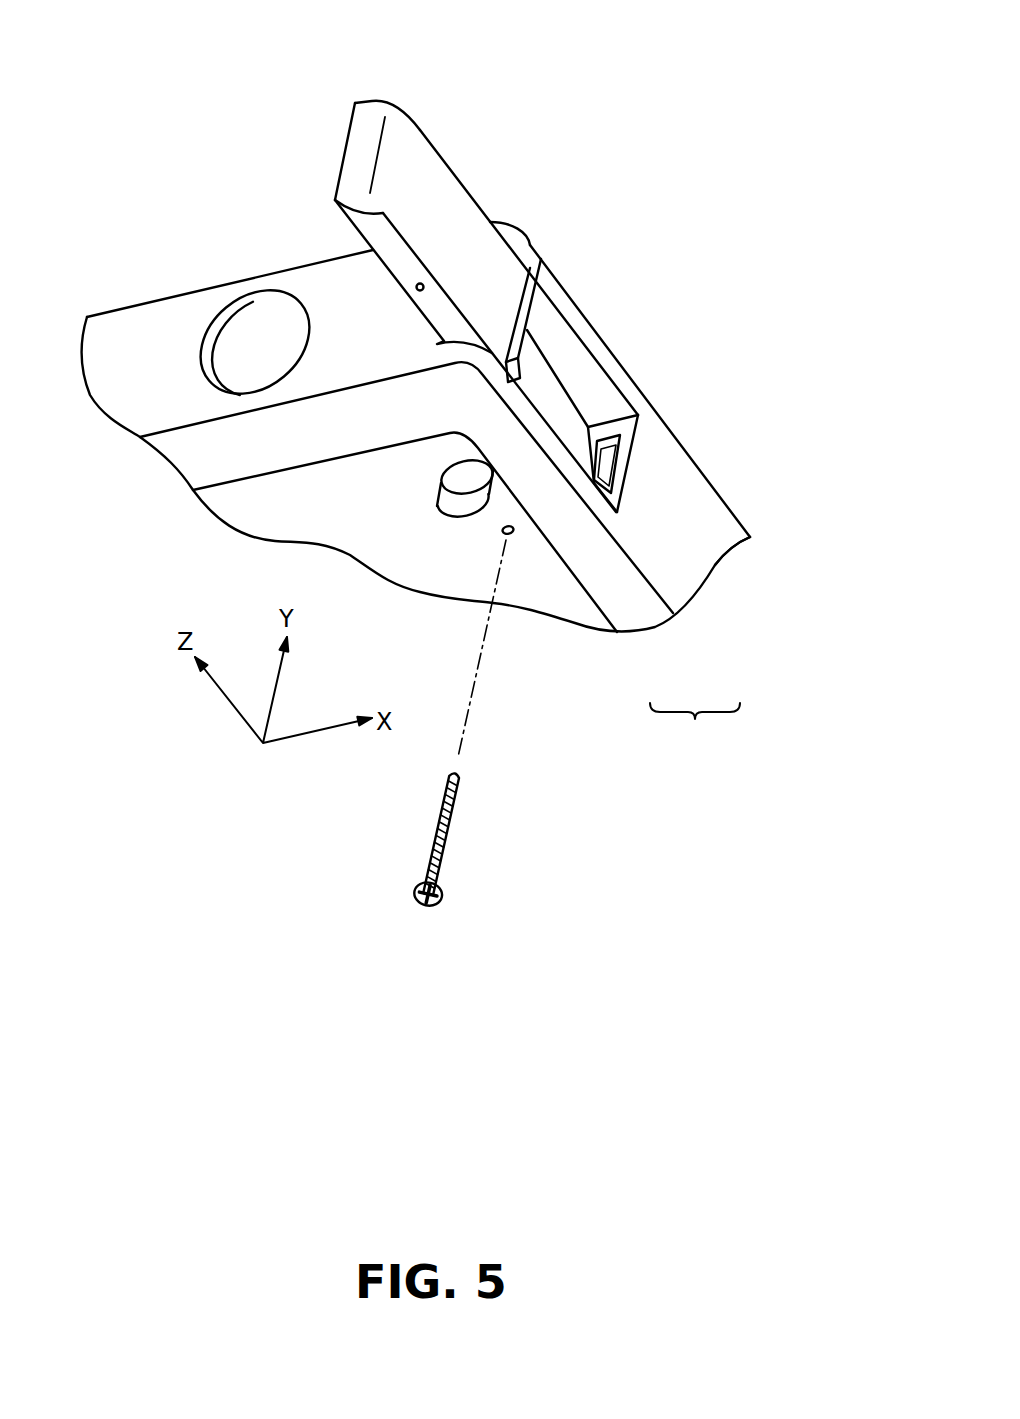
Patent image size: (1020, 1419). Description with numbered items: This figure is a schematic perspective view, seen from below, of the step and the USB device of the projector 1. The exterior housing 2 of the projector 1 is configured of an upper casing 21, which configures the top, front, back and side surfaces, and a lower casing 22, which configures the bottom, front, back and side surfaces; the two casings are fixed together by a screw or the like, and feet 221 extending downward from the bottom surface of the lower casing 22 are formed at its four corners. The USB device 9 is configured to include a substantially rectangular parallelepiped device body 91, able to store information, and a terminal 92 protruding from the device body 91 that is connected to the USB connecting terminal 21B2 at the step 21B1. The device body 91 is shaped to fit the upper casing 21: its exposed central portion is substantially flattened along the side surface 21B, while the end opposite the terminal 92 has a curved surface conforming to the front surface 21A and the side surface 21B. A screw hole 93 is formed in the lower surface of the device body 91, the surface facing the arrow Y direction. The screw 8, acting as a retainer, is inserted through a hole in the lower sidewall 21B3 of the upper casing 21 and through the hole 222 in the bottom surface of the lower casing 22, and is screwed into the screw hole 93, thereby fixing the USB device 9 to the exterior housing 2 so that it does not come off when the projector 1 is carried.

The projector 1 is at (668, 150).
The exterior housing 2 is at (695, 727).
The upper casing 21 is at (704, 568).
The front surface 21A is at (145, 327).
The side surface 21B is at (703, 508).
The step 21B1 is at (565, 337).
The USB connecting terminal 21B2 is at (630, 450).
The lower sidewall 21B3 is at (527, 340).
The lower casing 22 is at (632, 620).
The foot 221 is at (462, 510).
The hole 222 is at (513, 537).
The screw 8 is at (453, 830).
The USB device 9 is at (421, 128).
The device body 91 is at (442, 197).
The terminal 92 is at (542, 285).
The screw hole 93 is at (416, 290).